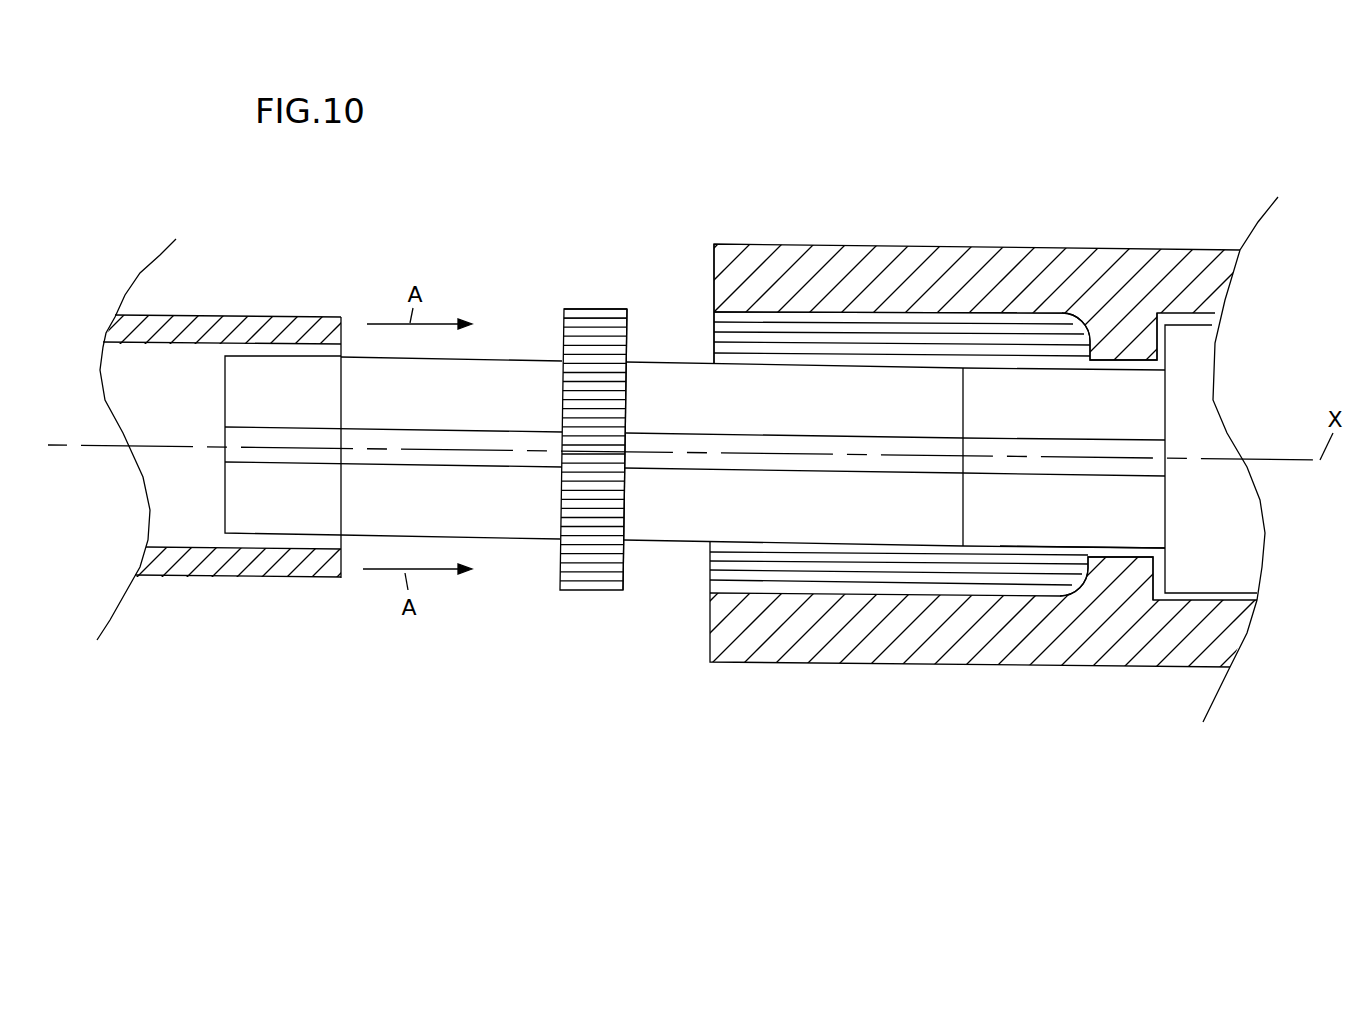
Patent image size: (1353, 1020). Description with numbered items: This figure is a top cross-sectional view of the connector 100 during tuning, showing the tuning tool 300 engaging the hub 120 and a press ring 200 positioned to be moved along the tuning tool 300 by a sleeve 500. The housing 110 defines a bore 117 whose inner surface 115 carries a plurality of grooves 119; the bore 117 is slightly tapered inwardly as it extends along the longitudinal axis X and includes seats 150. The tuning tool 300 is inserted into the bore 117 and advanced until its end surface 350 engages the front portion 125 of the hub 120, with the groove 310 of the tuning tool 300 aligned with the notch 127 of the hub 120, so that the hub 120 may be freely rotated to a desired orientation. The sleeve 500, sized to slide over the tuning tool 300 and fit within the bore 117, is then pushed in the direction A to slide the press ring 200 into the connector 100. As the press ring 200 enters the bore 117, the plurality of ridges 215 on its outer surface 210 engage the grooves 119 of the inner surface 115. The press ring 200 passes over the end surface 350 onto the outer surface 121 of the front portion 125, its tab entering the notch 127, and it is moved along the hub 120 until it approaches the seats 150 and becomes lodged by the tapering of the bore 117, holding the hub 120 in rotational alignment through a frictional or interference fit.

The connector 100 is at (1126, 202).
The housing 110 is at (1200, 257).
The inner surface 115 is at (833, 310).
The bore 117 is at (712, 340).
The plurality of grooves 119 is at (755, 343).
The hub 120 is at (1192, 362).
The outer surface 121 is at (1006, 574).
The front portion 125 is at (1127, 517).
The notch 127 is at (1150, 453).
The seats 150 is at (1104, 322).
The press ring 200 is at (591, 607).
The outer surface 210 is at (588, 318).
The plurality of ridges 215 is at (622, 332).
The tuning tool 300 is at (512, 517).
The groove 310 is at (487, 440).
The end surface 350 is at (977, 397).
The sleeve 500 is at (275, 320).